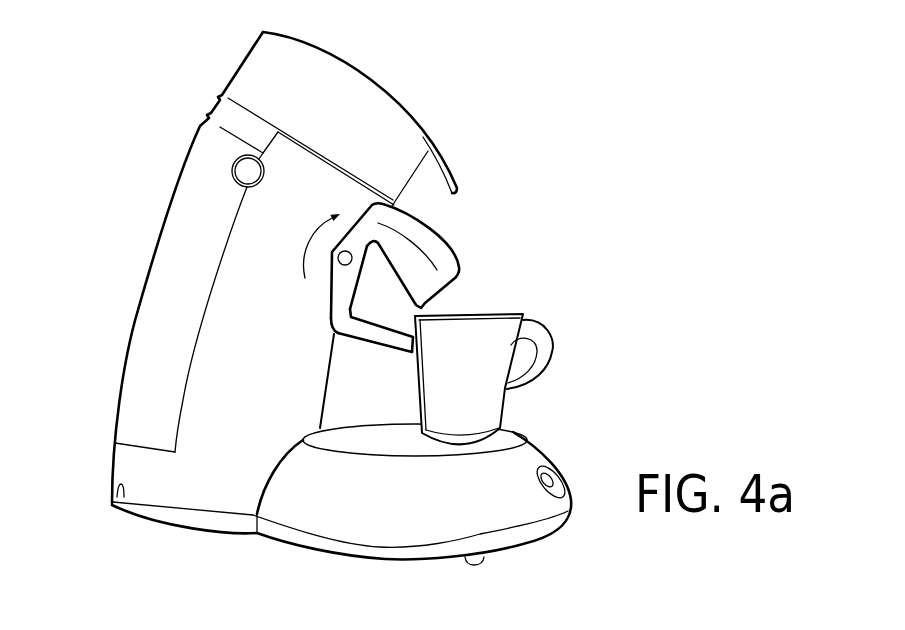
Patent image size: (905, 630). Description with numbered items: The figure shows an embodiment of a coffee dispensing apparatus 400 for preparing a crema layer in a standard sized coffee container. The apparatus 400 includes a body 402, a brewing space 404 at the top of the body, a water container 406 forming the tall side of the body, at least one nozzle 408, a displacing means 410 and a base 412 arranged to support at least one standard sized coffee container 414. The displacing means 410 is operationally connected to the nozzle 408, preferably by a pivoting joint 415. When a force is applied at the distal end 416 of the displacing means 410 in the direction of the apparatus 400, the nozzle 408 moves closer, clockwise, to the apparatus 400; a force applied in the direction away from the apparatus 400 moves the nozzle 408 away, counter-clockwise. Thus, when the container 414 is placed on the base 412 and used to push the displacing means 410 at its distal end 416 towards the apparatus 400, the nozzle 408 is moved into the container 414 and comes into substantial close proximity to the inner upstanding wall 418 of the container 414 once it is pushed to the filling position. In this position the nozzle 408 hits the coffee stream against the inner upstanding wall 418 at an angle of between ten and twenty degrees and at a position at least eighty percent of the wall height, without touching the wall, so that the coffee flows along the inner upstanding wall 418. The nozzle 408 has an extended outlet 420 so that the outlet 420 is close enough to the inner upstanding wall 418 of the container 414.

The coffee dispensing apparatus 400 is at (534, 126).
The body 402 is at (190, 495).
The brewing space 404 is at (358, 78).
The water container 406 is at (160, 277).
The nozzle 408 is at (464, 244).
The displacing means 410 is at (321, 337).
The base 412 is at (387, 523).
The standard sized coffee container 414 is at (562, 317).
The pivoting joint 415 is at (338, 258).
The distal end 416 is at (390, 342).
The inner upstanding wall 418 is at (433, 370).
The extended outlet 420 is at (350, 300).